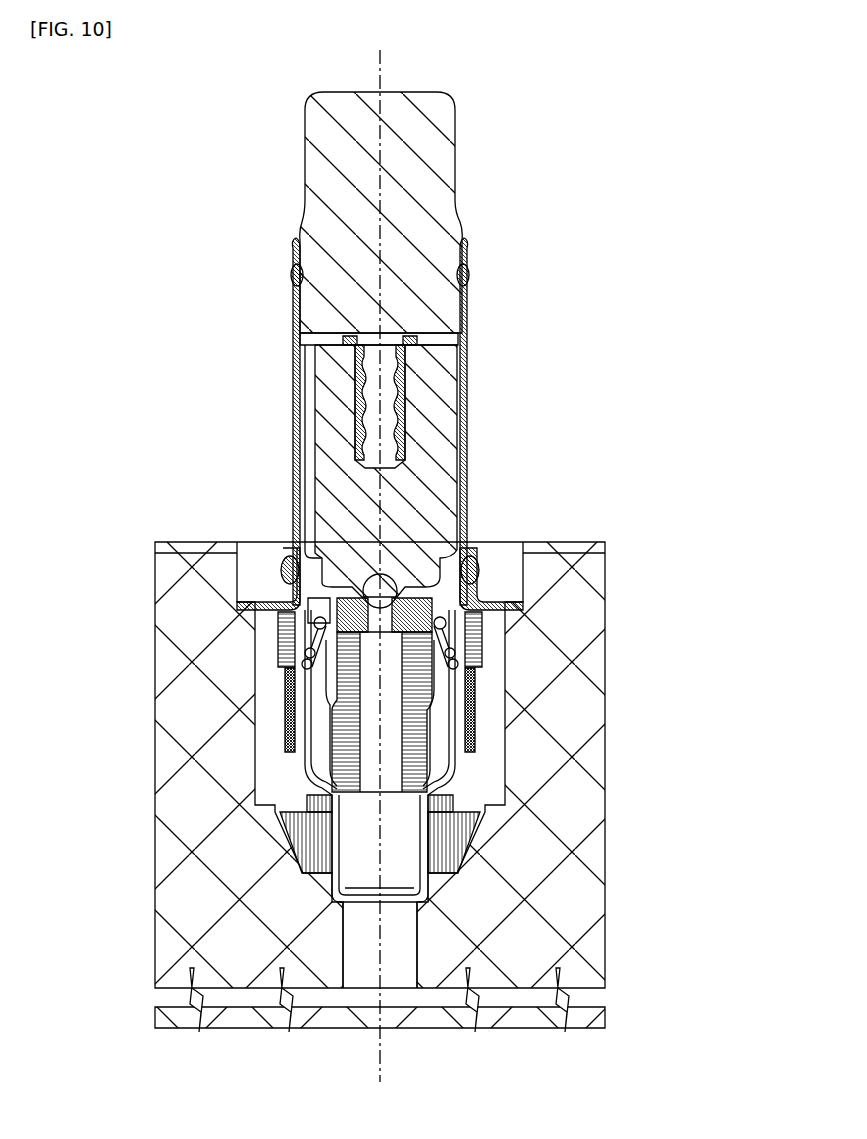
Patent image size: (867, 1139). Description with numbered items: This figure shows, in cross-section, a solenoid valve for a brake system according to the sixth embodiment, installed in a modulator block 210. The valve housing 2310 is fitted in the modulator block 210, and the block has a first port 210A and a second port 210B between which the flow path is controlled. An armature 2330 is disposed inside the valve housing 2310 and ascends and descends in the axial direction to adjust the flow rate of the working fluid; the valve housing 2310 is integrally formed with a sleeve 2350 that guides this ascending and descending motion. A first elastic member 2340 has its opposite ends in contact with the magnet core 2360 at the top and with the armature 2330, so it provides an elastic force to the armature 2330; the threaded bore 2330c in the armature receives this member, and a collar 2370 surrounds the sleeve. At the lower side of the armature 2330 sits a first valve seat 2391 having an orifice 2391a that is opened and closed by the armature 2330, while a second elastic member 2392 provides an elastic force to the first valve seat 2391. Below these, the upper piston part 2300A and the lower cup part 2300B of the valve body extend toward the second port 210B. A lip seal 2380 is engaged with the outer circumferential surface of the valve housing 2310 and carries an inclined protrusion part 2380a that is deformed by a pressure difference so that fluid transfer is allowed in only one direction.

The modulator block 210 is at (605, 570).
The first port 210A is at (190, 746).
The second port 210B is at (398, 975).
The upper piston member 2300A is at (308, 735).
The lower piston cup 2300B is at (365, 900).
The valve housing 2310 is at (440, 838).
The armature 2330 is at (452, 436).
The threaded bore 2330c is at (358, 408).
The first elastic member 2340 is at (345, 336).
The sleeve 2350 is at (462, 250).
The magnet core 2360 is at (444, 160).
The collar 2370 is at (288, 647).
The lip seal 2380 is at (303, 855).
The inclined protrusion part 2380a is at (303, 833).
The first valve seat 2391 is at (350, 600).
The orifice 2391a is at (396, 605).
The second elastic member 2392 is at (290, 678).